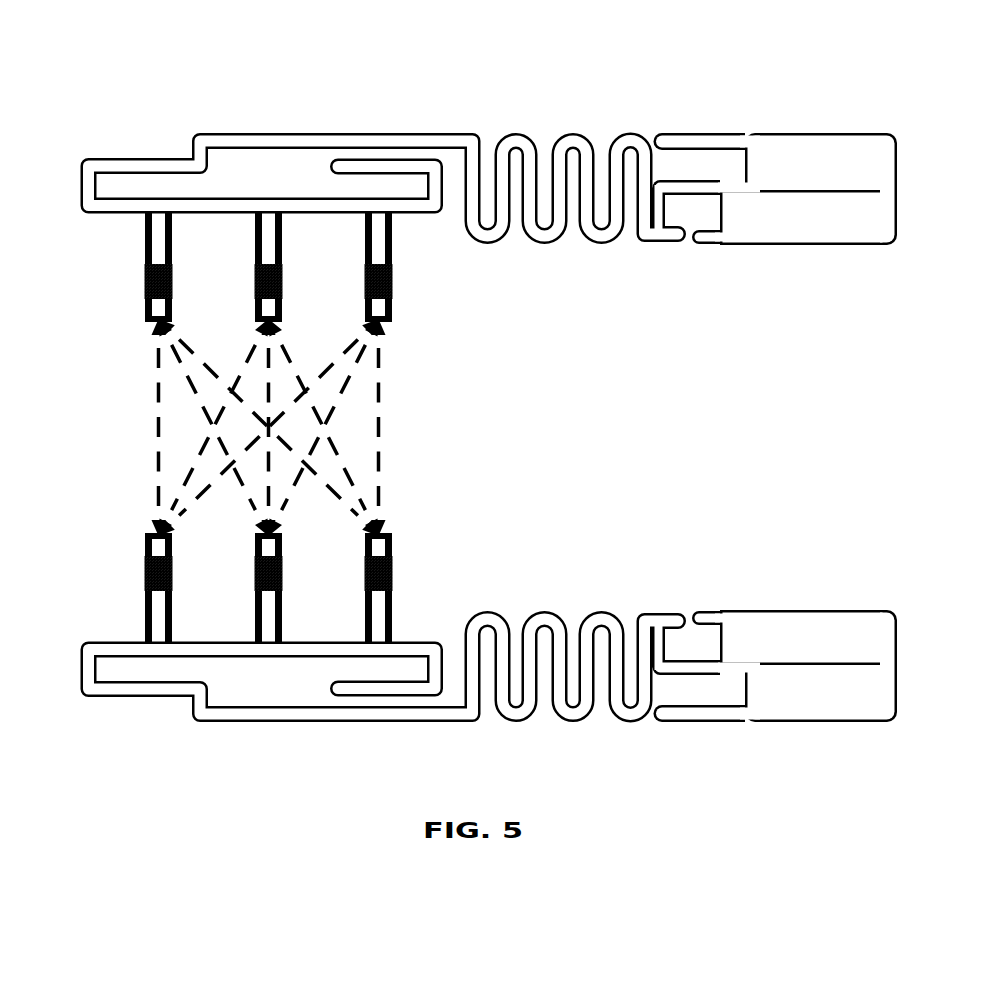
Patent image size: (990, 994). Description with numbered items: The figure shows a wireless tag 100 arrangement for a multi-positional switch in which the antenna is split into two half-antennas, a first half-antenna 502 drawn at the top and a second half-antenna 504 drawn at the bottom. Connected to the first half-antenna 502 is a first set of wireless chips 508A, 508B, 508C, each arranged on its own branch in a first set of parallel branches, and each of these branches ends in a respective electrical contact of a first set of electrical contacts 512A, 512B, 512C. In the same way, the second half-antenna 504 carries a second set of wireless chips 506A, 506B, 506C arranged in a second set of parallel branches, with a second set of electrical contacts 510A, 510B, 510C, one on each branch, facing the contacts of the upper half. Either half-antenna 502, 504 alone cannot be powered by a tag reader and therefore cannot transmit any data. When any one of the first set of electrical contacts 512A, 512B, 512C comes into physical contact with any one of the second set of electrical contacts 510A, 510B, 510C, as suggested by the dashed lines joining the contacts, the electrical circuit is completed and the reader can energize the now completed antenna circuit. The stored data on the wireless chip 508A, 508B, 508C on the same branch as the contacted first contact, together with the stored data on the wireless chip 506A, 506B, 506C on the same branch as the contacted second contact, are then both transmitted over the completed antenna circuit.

The wireless tag 100 is at (121, 61).
The first half-antenna 502 is at (900, 193).
The second half-antenna 504 is at (905, 663).
The wireless chip 508A is at (372, 275).
The wireless chip 508B is at (262, 270).
The wireless chip 508C is at (143, 283).
The electrical contact 510A is at (392, 548).
The electrical contact 510B is at (262, 556).
The electrical contact 510C is at (151, 556).
The electrical contact 512A is at (393, 318).
The electrical contact 512B is at (330, 301).
The electrical contact 512C is at (222, 301).
The wireless chip 506A is at (365, 580).
The wireless chip 506B is at (262, 574).
The wireless chip 506C is at (150, 572).